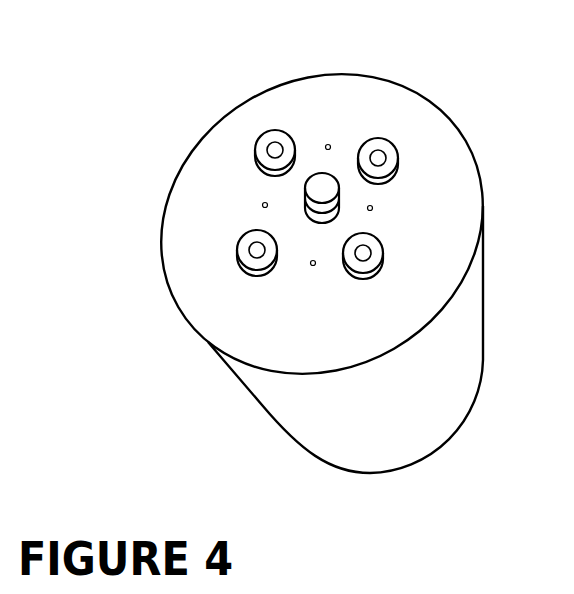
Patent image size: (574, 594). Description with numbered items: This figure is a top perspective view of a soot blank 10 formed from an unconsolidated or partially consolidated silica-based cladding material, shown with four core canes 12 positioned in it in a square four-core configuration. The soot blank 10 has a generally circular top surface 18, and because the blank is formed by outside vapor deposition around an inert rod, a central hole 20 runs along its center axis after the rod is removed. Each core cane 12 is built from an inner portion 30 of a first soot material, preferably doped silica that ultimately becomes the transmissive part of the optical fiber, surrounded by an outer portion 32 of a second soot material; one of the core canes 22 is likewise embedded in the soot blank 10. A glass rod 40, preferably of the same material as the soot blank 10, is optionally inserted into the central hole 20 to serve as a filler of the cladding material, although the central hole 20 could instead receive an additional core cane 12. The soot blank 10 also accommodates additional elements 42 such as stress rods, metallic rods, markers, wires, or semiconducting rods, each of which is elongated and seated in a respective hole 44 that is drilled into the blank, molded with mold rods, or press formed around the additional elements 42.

The soot blank 10 is at (457, 370).
The core cane 12 is at (282, 131).
The top surface 18 is at (446, 178).
The central hole 20 is at (305, 222).
The boss 22 is at (390, 138).
The inner portion 30 is at (272, 148).
The outer portion 32 is at (260, 168).
The glass rod 40 is at (312, 265).
The additional elements 42 is at (330, 146).
The hole 44 is at (328, 145).